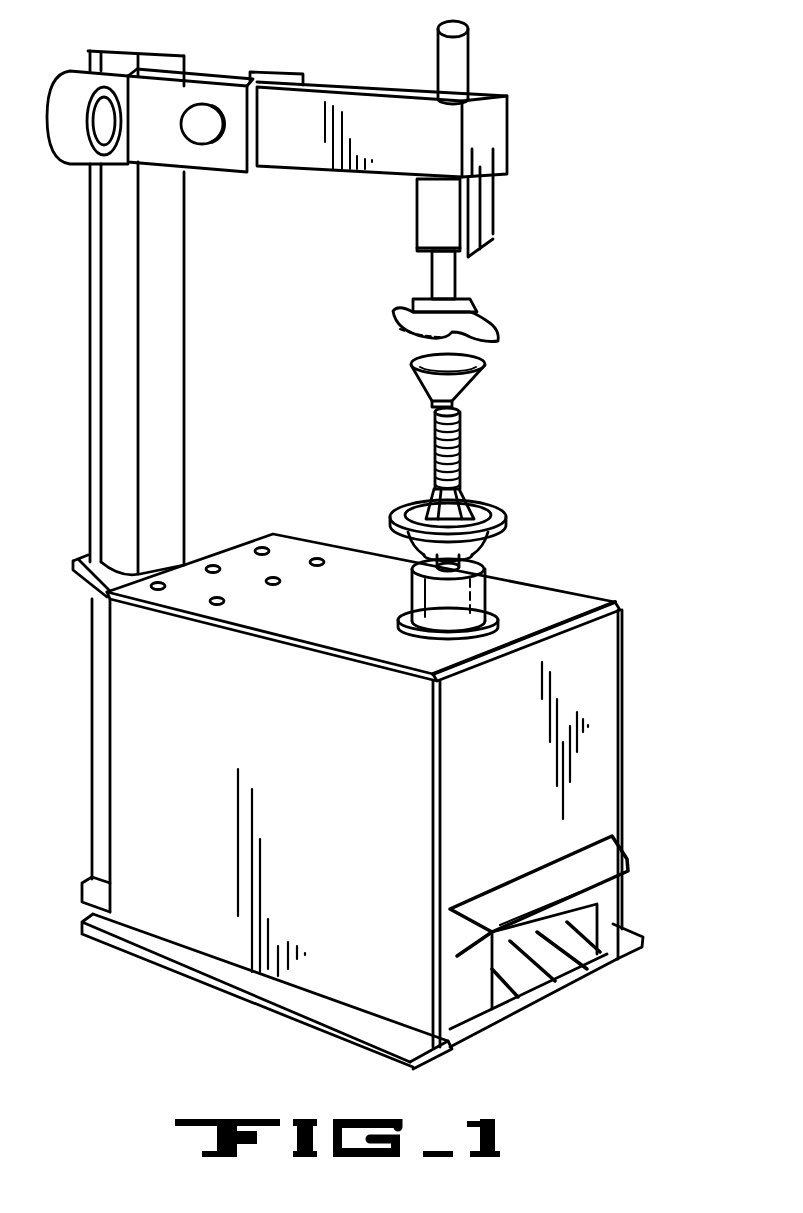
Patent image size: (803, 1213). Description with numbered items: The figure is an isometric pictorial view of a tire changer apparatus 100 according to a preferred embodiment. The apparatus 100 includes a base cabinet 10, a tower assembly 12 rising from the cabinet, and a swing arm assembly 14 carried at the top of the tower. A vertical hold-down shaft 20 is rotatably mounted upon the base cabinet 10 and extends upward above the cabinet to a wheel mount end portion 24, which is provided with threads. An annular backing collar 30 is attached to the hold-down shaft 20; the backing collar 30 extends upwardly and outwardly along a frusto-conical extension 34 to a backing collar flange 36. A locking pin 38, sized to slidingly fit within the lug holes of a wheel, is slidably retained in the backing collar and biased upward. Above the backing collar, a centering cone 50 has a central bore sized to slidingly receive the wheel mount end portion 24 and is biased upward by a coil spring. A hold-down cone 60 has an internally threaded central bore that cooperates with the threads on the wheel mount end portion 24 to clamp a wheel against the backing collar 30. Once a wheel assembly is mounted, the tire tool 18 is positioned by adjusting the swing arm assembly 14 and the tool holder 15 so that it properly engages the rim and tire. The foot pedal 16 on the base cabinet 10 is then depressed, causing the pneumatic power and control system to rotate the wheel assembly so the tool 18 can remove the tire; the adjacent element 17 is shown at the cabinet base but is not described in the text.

The tire changer apparatus 100 is at (528, 62).
The base cabinet 10 is at (630, 638).
The tower assembly 12 is at (157, 259).
The swing arm assembly 14 is at (365, 111).
The tool holder 15 is at (432, 276).
The tire tool 18 is at (452, 318).
The hold-down cone 60 is at (444, 379).
The wheel mount end portion 24 is at (452, 409).
The backing collar 30 is at (471, 510).
The centering cone 50 is at (430, 488).
The backing collar flange 36 is at (385, 503).
The locking pin 38 is at (470, 491).
The frusto-conical extension 34 is at (402, 532).
The vertical hold-down shaft 20 is at (405, 563).
The foot pedal 16 is at (560, 948).
The grate bars 17 is at (505, 979).